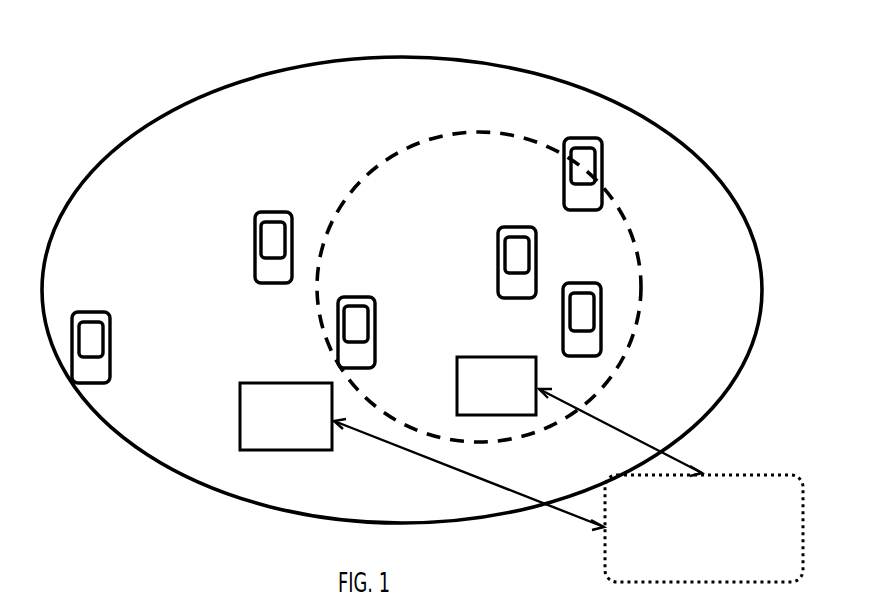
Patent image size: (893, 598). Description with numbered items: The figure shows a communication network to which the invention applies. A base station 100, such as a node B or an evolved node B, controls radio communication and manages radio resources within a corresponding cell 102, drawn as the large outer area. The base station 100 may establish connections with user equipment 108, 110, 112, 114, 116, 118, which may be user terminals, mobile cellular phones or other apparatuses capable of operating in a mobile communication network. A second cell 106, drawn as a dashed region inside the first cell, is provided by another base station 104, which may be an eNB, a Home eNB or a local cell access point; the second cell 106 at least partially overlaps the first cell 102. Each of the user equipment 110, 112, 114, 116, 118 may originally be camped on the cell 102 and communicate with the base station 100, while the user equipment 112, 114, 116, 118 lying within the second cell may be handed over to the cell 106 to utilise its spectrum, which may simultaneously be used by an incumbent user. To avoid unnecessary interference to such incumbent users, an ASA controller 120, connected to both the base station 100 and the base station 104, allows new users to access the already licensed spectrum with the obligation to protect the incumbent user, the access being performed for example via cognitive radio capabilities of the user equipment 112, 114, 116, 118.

The base station 100 is at (240, 418).
The cell 102 is at (593, 88).
The base station 104 is at (457, 405).
The cell 106 is at (400, 151).
The user equipment 108 is at (86, 312).
The user equipment 110 is at (255, 250).
The user equipment 112 is at (351, 297).
The user equipment 114 is at (498, 274).
The user equipment 116 is at (594, 283).
The user equipment 118 is at (602, 150).
The ASA controller 120 is at (704, 528).